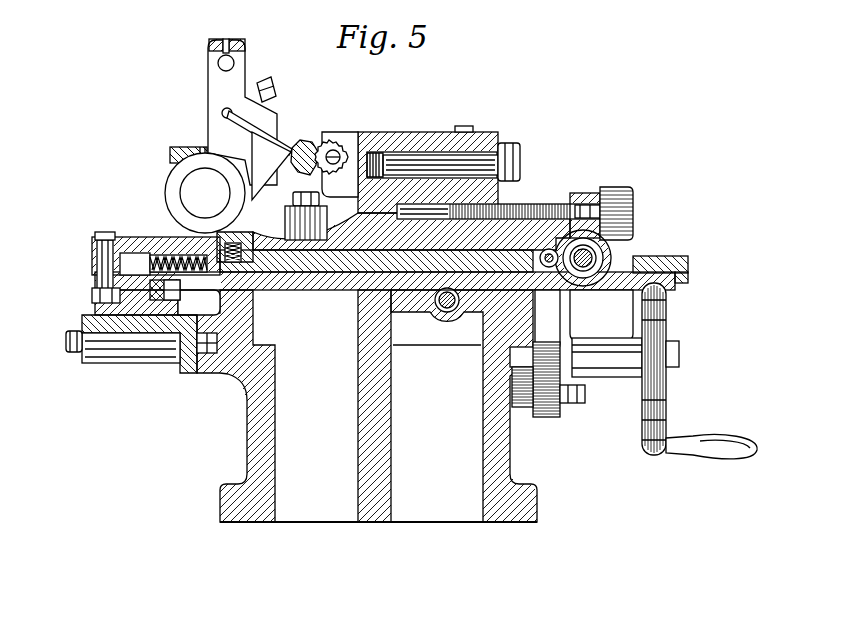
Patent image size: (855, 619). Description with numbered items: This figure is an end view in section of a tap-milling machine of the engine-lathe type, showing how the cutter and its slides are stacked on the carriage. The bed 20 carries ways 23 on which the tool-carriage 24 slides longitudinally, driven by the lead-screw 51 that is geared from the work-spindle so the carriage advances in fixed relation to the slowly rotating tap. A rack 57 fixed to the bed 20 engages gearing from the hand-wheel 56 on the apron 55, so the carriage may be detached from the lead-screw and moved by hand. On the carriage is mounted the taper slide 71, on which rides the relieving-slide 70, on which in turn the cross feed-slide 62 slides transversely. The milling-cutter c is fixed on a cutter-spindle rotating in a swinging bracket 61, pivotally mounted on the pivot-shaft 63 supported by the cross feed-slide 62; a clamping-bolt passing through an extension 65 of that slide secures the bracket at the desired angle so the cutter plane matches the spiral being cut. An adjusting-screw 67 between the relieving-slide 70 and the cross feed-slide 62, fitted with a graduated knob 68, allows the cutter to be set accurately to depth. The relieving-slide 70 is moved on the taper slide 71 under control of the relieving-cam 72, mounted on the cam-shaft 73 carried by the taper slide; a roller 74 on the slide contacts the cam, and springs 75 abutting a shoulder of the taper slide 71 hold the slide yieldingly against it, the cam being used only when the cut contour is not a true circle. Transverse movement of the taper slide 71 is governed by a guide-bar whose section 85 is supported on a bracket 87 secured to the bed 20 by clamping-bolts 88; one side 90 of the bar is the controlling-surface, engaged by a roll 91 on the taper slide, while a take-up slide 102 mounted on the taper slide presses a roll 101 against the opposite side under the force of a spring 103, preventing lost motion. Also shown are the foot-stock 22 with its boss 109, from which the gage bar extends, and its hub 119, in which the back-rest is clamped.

The bed 20 is at (246, 446).
The foot-stock 22 is at (208, 94).
The ways 23 is at (487, 312).
The tool-carriage 24 is at (301, 291).
The lead-screw 51 is at (447, 310).
The apron 55 is at (565, 418).
The hand-wheel 56 is at (666, 400).
The rack 57 is at (522, 362).
The swinging bracket 61 is at (376, 131).
The cross feed-slide 62 is at (432, 131).
The pivot-shaft 63 is at (481, 162).
The extension 65 is at (464, 126).
The adjusting-screw 67 is at (540, 206).
The knob 68 is at (630, 189).
The relieving-slide 70 is at (344, 272).
The taper slide 71 is at (152, 243).
The relieving-cam 72 is at (603, 248).
The cam-shaft 73 is at (588, 268).
The roller 74 is at (549, 268).
The springs 75 is at (236, 243).
The guide-bar section 85 is at (95, 310).
The bracket 87 is at (191, 368).
The clamping-bolts 88 is at (68, 346).
The controlling-surface 90 is at (98, 287).
The roll 91 is at (92, 296).
The roll 101 is at (153, 338).
The take-up slide 102 is at (130, 237).
The spring 103 is at (178, 258).
The boss 109 is at (210, 45).
The hub 119 is at (176, 183).
The milling-cutter c is at (333, 142).